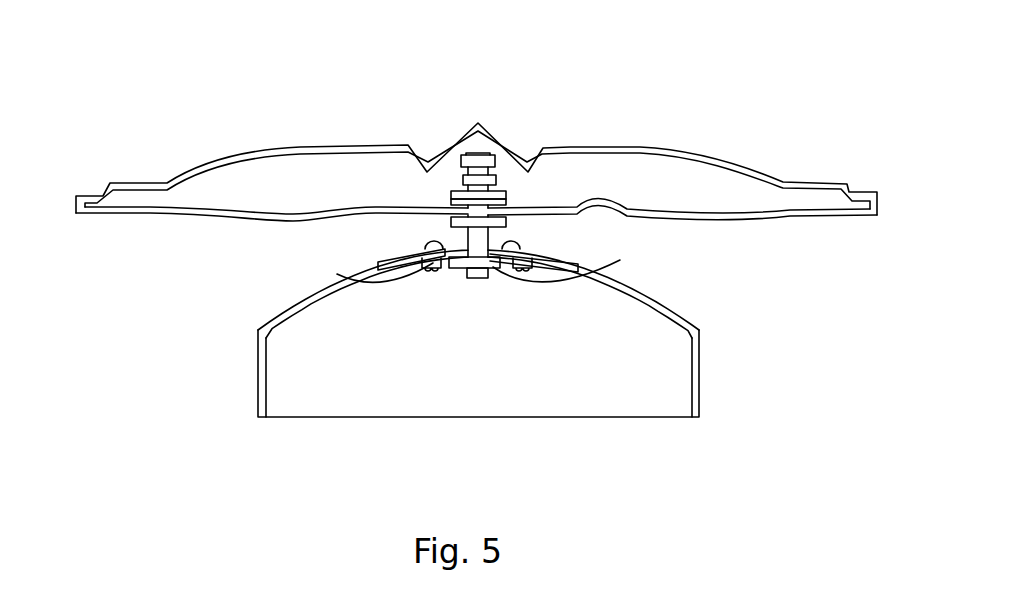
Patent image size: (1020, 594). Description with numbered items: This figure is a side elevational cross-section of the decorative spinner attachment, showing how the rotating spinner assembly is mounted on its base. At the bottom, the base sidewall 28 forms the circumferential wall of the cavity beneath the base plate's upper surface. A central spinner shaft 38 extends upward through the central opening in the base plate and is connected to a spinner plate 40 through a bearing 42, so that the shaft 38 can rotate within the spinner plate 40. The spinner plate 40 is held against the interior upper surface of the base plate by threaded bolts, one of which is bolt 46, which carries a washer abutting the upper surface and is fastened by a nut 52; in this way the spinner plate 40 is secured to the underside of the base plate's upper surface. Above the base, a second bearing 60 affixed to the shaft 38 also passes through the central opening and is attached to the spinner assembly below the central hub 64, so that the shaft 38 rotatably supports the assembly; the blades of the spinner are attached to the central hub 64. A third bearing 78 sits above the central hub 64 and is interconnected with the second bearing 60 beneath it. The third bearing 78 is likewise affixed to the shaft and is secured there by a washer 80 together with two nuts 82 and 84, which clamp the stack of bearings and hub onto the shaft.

The base sidewall 28 is at (262, 372).
The central spinner shaft 38 is at (490, 237).
The spinner plate 40 is at (575, 268).
The bearing 42 is at (602, 274).
The threaded bolt 46 is at (423, 240).
The nut 52 is at (380, 268).
The second bearing 60 is at (450, 222).
The central hub 64 is at (415, 208).
The third bearing 78 is at (450, 192).
The washer 80 is at (499, 190).
The nut 82 is at (463, 172).
The nut 84 is at (496, 155).